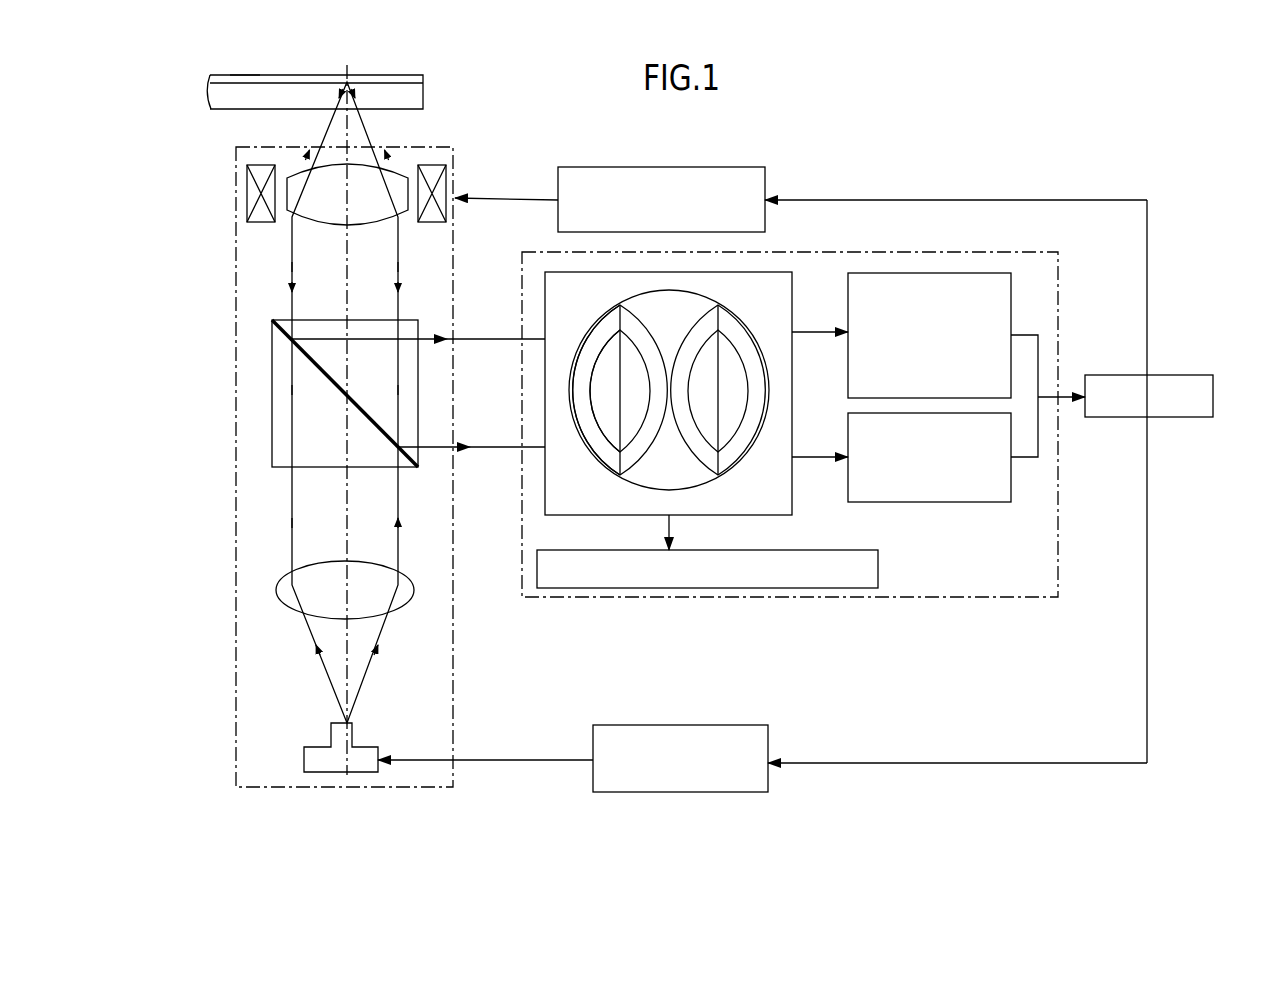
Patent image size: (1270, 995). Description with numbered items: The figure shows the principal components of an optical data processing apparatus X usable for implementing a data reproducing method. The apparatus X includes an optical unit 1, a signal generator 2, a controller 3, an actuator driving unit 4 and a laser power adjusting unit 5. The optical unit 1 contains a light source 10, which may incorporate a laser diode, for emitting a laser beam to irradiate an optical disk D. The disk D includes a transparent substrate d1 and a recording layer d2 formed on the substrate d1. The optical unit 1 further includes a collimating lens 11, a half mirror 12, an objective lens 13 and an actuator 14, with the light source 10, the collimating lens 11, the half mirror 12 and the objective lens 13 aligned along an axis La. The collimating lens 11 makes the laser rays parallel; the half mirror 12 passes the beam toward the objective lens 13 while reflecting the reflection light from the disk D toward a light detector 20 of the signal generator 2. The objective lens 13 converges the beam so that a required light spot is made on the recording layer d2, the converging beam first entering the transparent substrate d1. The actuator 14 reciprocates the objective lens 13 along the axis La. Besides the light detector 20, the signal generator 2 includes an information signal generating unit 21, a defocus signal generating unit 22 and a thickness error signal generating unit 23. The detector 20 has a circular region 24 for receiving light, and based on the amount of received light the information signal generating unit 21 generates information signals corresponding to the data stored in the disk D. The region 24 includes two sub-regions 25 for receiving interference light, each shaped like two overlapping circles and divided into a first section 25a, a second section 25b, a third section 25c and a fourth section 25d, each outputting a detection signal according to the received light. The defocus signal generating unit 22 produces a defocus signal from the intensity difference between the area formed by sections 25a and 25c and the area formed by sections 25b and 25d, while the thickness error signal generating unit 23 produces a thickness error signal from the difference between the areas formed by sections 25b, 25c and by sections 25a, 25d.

The optical unit 1 is at (236, 303).
The signal generator 2 is at (822, 251).
The controller 3 is at (1115, 375).
The actuator driving unit 4 is at (700, 167).
The laser power adjusting unit 5 is at (732, 725).
The light source 10 is at (304, 753).
The collimating lens 11 is at (410, 583).
The half mirror 12 is at (272, 447).
The objective lens 13 is at (289, 209).
The actuator 14 is at (437, 223).
The light detector 20 is at (794, 305).
The information signal generating unit 21 is at (782, 551).
The defocus signal generating unit 22 is at (1012, 305).
The thickness error signal generating unit 23 is at (1012, 478).
The circular region 24 is at (741, 311).
The sub-region 25 is at (753, 340).
The first section 25a is at (695, 342).
The second section 25b is at (588, 438).
The third section 25c is at (627, 435).
The fourth section 25d is at (608, 433).
The optical disk D is at (426, 96).
The transparent substrate d1 is at (248, 96).
The recording layer d2 is at (258, 77).
The axis La is at (345, 548).
The optical data processing apparatus X is at (838, 168).